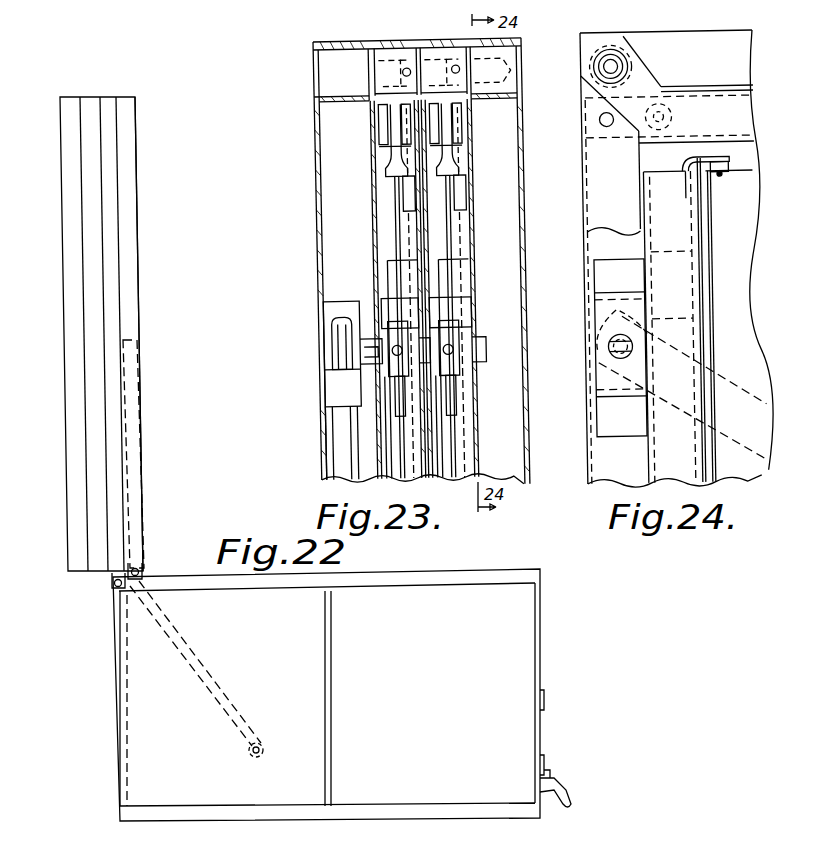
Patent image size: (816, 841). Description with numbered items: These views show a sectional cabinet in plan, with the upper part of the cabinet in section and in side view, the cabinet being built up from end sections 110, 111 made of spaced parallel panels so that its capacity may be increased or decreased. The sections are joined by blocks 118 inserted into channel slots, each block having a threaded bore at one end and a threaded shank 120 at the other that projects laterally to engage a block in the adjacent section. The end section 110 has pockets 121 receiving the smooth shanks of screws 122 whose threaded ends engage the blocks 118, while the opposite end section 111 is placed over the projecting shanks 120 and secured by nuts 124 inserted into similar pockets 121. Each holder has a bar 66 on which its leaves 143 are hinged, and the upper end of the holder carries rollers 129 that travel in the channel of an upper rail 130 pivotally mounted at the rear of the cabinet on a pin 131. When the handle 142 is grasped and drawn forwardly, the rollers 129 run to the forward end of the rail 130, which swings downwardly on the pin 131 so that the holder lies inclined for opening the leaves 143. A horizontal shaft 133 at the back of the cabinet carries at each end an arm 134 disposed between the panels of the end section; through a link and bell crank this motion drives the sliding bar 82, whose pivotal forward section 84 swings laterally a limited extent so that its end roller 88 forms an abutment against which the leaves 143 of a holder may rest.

In FIG. 23, the bar 66 is at (460, 283).
In FIG. 24, the bar 66 is at (699, 318).
In FIG. 22, the sliding bar 82 is at (133, 480).
In FIG. 22, the pivotal forward section 84 is at (223, 690).
In FIG. 22, the roller 88 is at (263, 745).
In FIG. 22, the end section 110 is at (66, 319).
In FIG. 23, the end section 110 is at (314, 252).
In FIG. 22, the end section 111 is at (138, 288).
In FIG. 23, the end section 111 is at (521, 258).
In FIG. 23, the block 118 is at (403, 58).
In FIG. 24, the threaded shank 120 is at (615, 70).
In FIG. 23, the pocket 121 is at (495, 103).
In FIG. 23, the screw 122 is at (342, 86).
In FIG. 23, the nut 124 is at (512, 84).
In FIG. 23, the roller 129 is at (383, 131).
In FIG. 24, the roller 129 is at (682, 124).
In FIG. 23, the upper rail 130 is at (461, 172).
In FIG. 24, the upper rail 130 is at (700, 92).
In FIG. 24, the pin 131 is at (605, 125).
In FIG. 23, the shaft 133 is at (320, 372).
In FIG. 23, the arm 134 is at (326, 457).
In FIG. 24, the arm 134 is at (738, 374).
In FIG. 22, the handle 142 is at (566, 786).
In FIG. 22, the leaves 143 is at (413, 690).
In FIG. 24, the leaves 143 is at (720, 319).